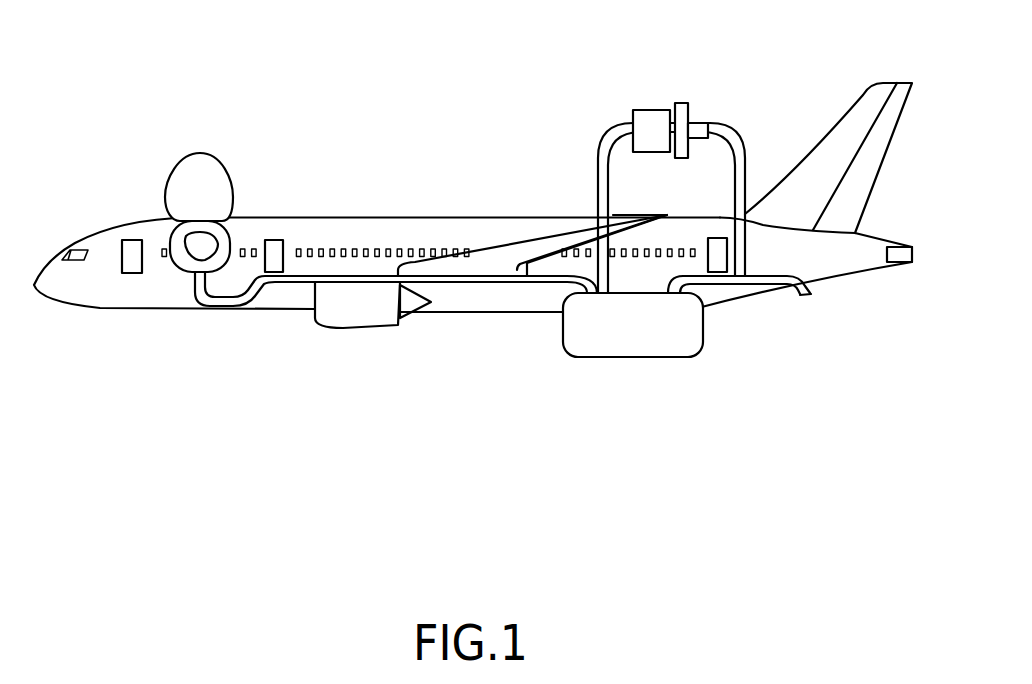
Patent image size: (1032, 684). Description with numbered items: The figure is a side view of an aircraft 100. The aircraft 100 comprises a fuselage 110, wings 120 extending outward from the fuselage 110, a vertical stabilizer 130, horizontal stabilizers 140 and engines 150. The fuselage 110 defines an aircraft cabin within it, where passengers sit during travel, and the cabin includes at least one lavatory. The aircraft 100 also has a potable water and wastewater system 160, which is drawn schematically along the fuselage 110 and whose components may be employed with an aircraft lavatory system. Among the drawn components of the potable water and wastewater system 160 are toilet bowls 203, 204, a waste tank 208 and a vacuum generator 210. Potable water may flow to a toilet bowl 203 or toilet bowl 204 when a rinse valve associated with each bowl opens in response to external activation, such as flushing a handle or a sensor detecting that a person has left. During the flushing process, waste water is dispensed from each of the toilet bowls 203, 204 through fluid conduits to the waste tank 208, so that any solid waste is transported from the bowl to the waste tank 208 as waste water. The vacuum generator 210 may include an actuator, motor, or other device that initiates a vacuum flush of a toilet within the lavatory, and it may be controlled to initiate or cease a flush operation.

The aircraft 100 is at (473, 244).
The fuselage 110 is at (320, 217).
The wings 120 is at (510, 243).
The vertical stabilizer 130 is at (896, 103).
The horizontal stabilizers 140 is at (900, 265).
The engines 150 is at (376, 321).
The potable water and wastewater system 160 is at (483, 253).
The toilet bowl 203 is at (197, 184).
The toilet bowl 204 is at (190, 183).
The waste tank 208 is at (596, 340).
The vacuum generator 210 is at (655, 118).